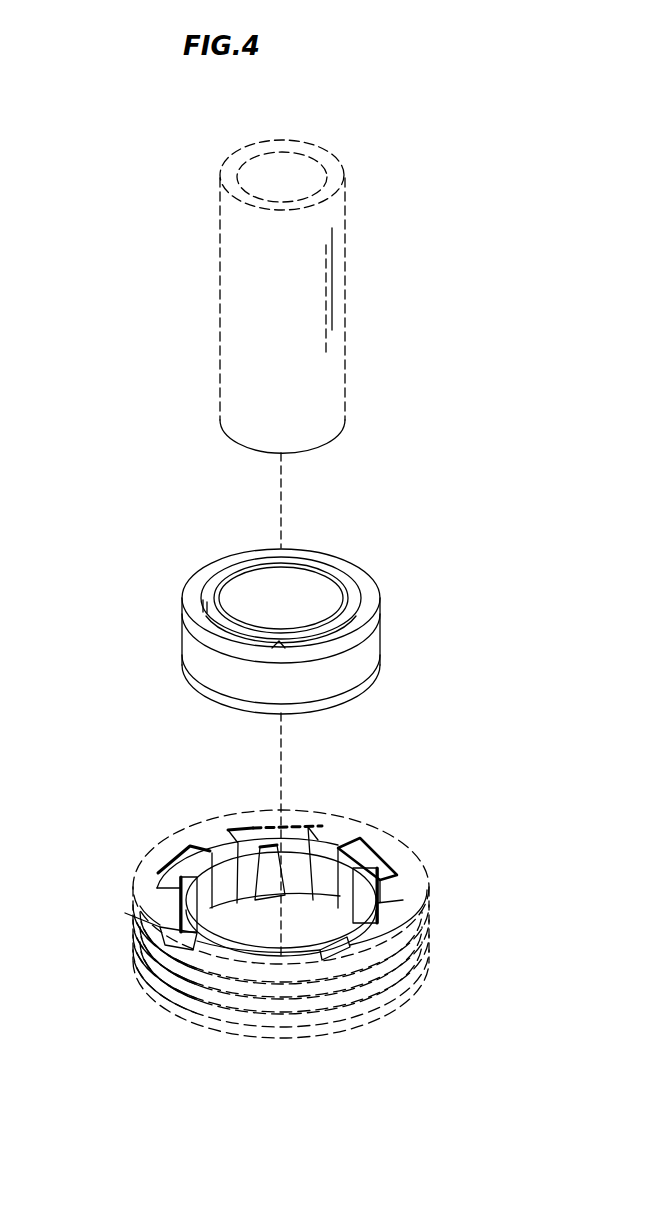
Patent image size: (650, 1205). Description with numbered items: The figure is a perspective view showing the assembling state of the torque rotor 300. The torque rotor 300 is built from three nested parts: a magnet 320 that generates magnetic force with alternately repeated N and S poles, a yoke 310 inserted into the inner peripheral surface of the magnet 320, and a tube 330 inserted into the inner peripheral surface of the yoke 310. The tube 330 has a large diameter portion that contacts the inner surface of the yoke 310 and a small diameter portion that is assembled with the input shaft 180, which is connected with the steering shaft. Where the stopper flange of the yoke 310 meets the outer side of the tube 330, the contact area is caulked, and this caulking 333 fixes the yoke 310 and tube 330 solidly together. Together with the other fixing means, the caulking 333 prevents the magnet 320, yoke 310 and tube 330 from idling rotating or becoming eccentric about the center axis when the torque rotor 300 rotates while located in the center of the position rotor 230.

The input shaft 180 is at (206, 258).
The torque rotor 300 is at (284, 616).
The yoke 310 is at (373, 597).
The magnet 320 is at (373, 645).
The tube 330 is at (372, 688).
The caulking 333 is at (204, 607).
The position rotor 230 is at (122, 865).